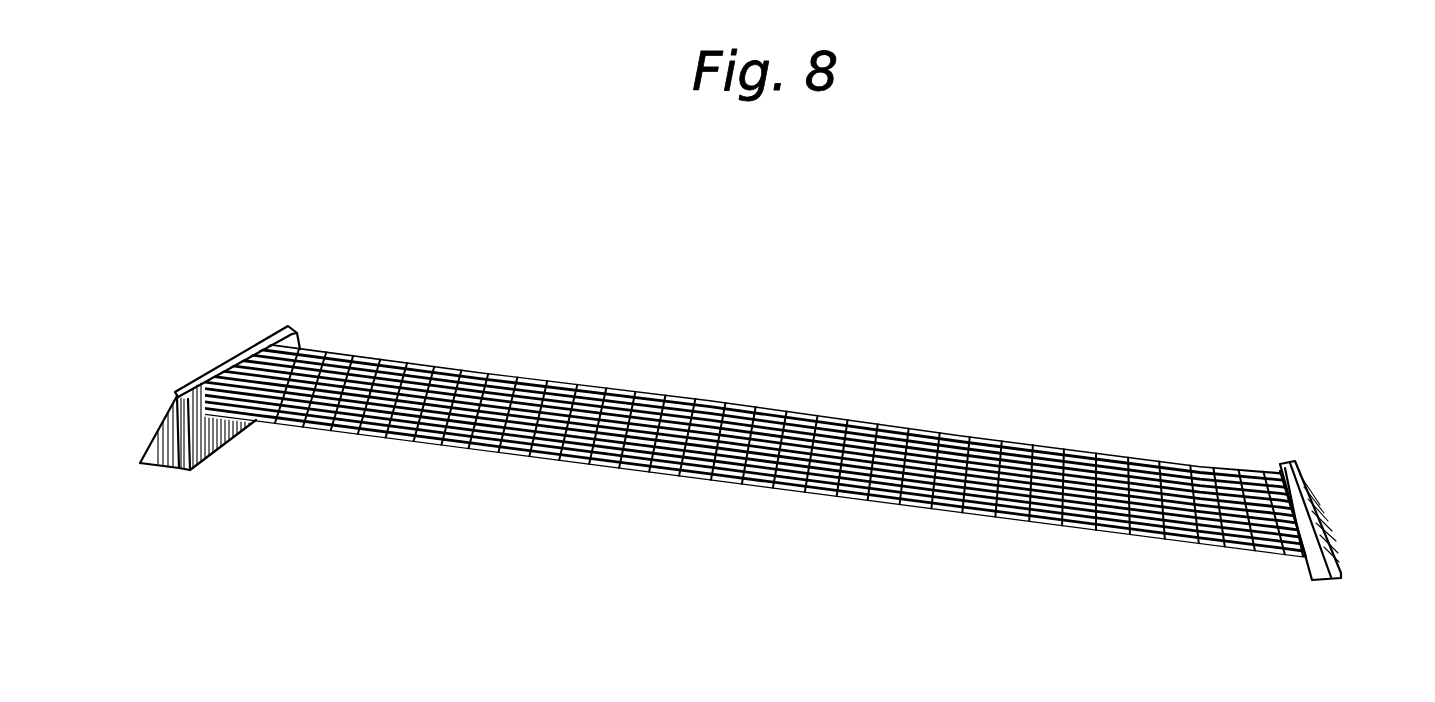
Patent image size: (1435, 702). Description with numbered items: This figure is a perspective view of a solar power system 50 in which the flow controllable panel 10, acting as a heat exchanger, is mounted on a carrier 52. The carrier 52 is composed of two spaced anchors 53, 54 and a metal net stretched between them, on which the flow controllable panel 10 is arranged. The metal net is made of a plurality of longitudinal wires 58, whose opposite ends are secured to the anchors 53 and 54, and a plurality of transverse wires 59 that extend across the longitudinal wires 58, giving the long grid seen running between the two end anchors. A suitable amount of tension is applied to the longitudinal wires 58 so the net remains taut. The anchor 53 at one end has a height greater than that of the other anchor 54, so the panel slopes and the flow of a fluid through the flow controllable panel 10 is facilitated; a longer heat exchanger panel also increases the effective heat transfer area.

The solar power system 50 is at (1031, 366).
The flow controllable panel 10 is at (748, 406).
The longitudinal wires 58 is at (505, 372).
The transverse wires 59 is at (902, 430).
The carrier 52 is at (1283, 558).
The anchor 53 is at (157, 452).
The anchor 54 is at (1340, 575).